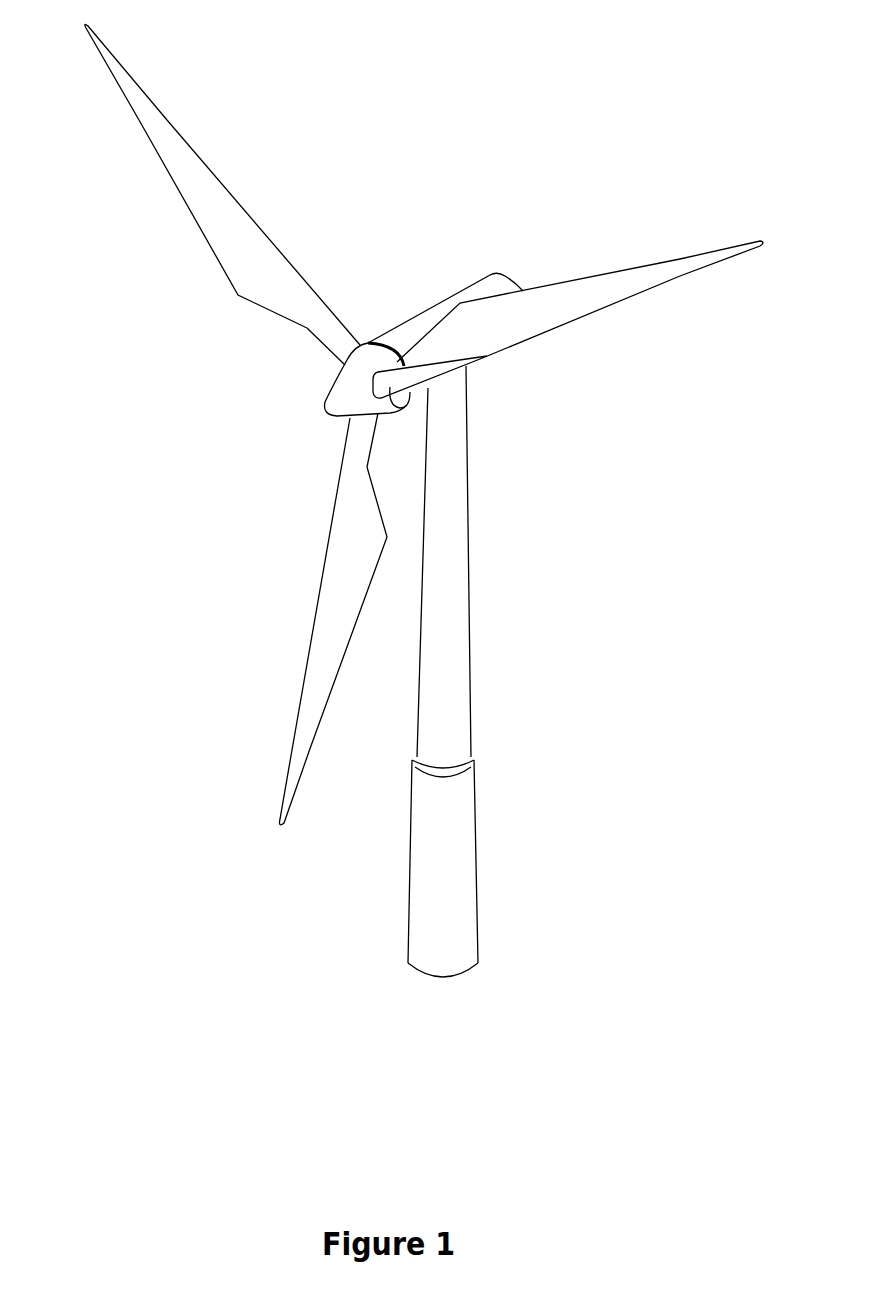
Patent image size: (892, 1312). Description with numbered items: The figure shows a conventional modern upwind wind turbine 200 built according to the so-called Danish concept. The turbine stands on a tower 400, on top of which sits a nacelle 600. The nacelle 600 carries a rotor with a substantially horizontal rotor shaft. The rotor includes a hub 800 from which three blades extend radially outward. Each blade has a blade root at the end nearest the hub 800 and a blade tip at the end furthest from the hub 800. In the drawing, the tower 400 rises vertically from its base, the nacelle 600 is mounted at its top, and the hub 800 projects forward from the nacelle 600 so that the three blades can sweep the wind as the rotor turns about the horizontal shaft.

The wind turbine 200 is at (505, 705).
The tower 400 is at (455, 572).
The nacelle 600 is at (417, 327).
The hub 800 is at (337, 395).